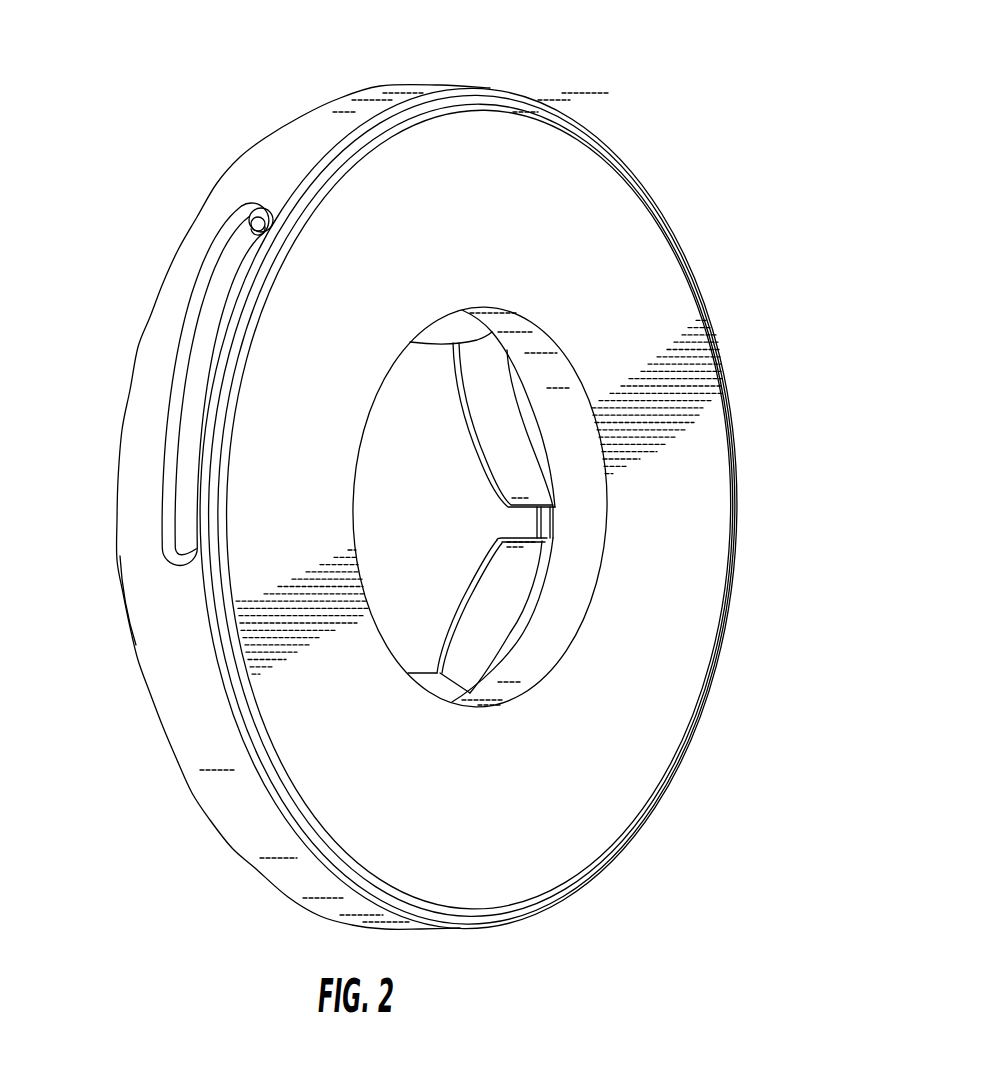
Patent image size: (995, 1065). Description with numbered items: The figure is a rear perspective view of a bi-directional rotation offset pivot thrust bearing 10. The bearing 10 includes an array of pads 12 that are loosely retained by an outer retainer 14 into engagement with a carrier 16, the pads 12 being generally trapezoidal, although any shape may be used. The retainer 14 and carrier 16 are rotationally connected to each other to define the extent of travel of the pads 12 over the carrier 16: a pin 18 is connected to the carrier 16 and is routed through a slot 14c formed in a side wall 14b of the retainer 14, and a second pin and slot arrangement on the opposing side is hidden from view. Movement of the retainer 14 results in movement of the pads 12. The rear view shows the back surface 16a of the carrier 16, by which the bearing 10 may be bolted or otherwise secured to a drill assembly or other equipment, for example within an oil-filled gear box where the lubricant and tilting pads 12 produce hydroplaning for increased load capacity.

The bi-directional rotation offset pivot thrust bearing 10 is at (610, 100).
The pads 12 is at (483, 603).
The outer retainer 14 is at (183, 783).
The side wall 14b is at (313, 123).
The slot 14c is at (178, 473).
The carrier 16 is at (678, 498).
The back surface 16a is at (668, 580).
The pin 18 is at (257, 212).